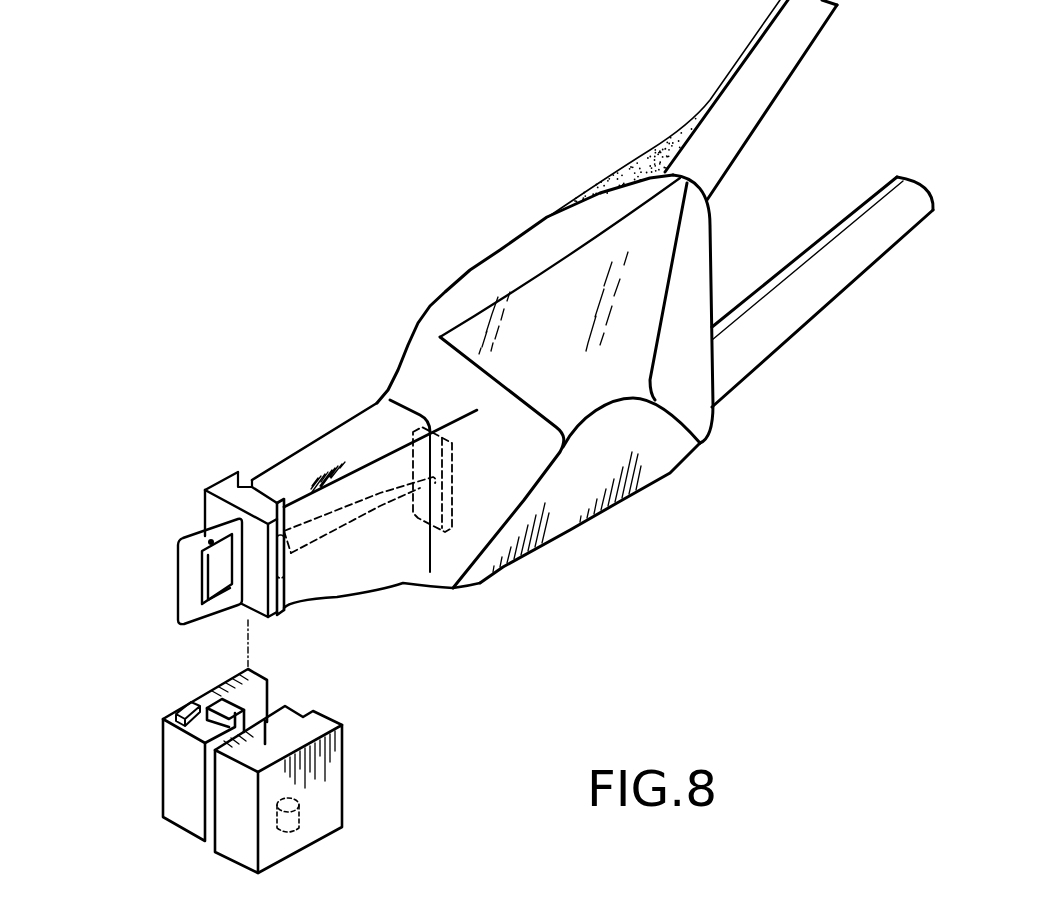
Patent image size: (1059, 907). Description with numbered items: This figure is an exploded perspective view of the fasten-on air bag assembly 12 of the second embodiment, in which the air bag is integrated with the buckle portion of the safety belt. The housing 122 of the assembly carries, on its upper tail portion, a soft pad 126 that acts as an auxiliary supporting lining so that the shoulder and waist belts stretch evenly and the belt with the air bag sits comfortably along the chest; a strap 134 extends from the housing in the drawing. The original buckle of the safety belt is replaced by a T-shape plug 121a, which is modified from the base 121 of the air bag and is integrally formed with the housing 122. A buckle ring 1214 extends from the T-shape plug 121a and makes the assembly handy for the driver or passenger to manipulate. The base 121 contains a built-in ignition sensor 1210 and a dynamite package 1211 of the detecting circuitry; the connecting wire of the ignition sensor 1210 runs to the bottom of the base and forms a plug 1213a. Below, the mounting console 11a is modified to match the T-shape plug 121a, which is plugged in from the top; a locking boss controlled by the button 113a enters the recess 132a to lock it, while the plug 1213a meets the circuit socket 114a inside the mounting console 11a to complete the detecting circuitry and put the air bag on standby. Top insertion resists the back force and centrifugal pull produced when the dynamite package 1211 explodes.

The air bag assembly 12 is at (413, 300).
The strap 134 is at (737, 97).
The soft pad 126 is at (650, 157).
The housing 122 is at (570, 253).
The base 121 is at (367, 440).
The T-shape plug 121a is at (253, 487).
The buckle ring 1214 is at (225, 520).
The recess 132a is at (186, 536).
The plug 1213a is at (289, 574).
The ignition sensor 1210 is at (353, 513).
The dynamite package 1211 is at (436, 502).
The mounting console 11a is at (163, 768).
The button 113a is at (182, 707).
The circuit socket 114a is at (300, 812).